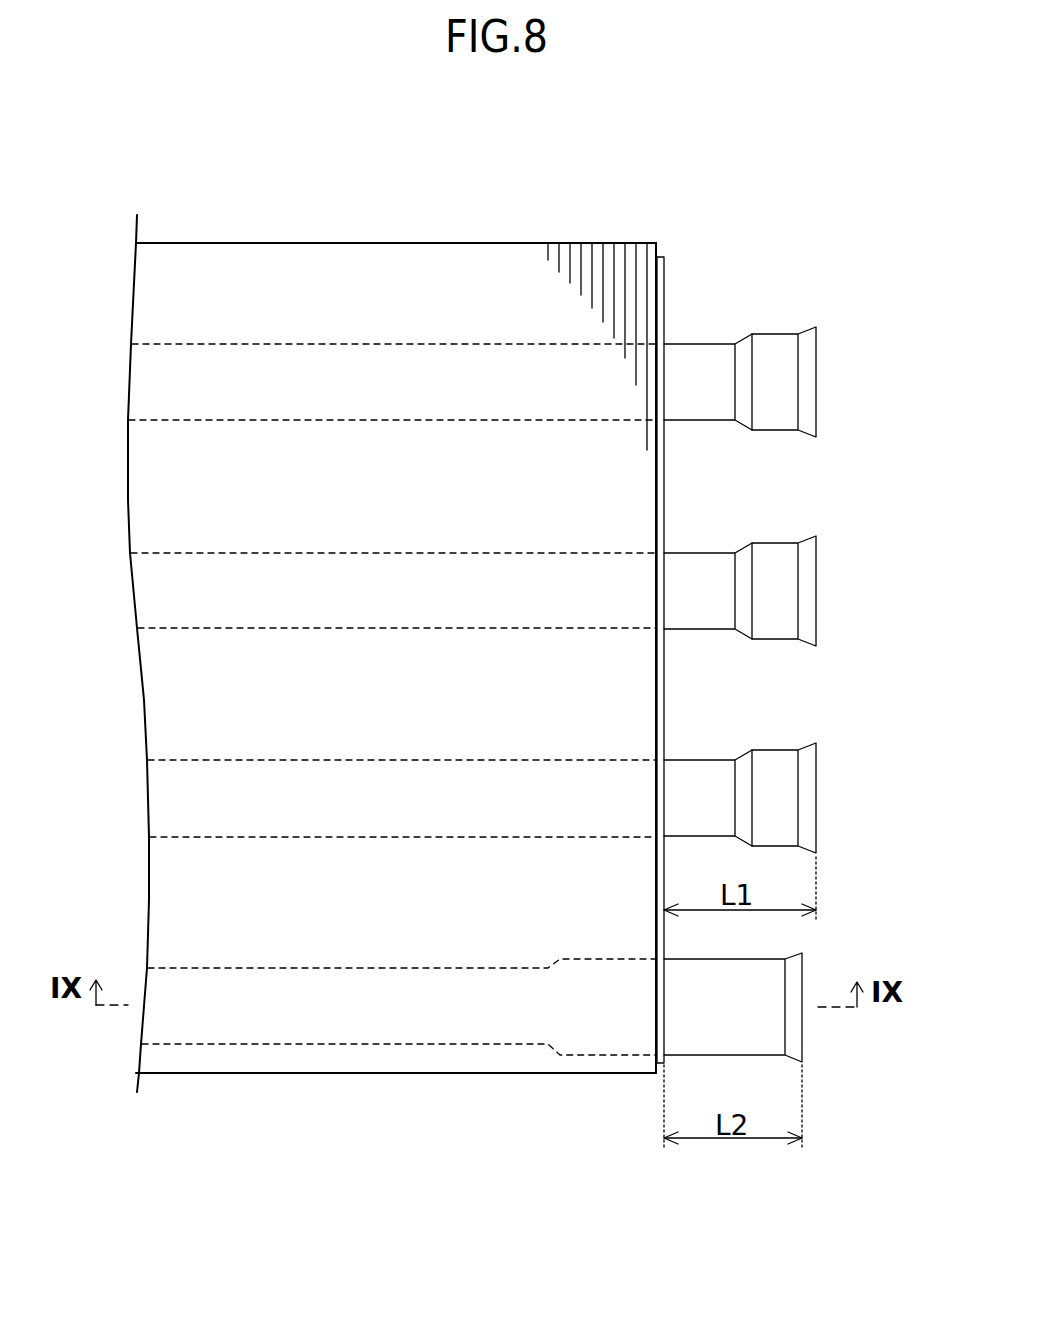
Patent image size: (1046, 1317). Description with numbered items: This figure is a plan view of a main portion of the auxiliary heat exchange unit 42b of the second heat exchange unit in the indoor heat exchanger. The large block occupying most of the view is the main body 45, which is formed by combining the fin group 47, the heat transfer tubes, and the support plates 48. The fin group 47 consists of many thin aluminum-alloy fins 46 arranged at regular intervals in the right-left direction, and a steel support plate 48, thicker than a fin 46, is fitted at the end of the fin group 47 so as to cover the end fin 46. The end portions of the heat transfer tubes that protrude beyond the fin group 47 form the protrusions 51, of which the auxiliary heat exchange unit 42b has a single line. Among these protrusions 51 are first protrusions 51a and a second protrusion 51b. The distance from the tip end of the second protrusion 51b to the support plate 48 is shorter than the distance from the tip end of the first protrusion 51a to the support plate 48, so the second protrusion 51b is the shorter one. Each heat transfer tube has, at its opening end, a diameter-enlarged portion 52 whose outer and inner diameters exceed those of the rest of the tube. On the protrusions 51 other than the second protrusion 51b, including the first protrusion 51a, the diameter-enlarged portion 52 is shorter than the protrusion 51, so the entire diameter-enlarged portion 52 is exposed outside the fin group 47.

The auxiliary heat exchange unit 42b is at (392, 621).
The main body 45 is at (300, 242).
The fin 46 is at (647, 443).
The fin group 47 is at (392, 633).
The support plate 48 is at (665, 280).
The protrusion 51 is at (494, 670).
The first protrusion 51a is at (690, 552).
The second protrusion 51b is at (720, 958).
The diameter-enlarged portion 52 is at (777, 345).